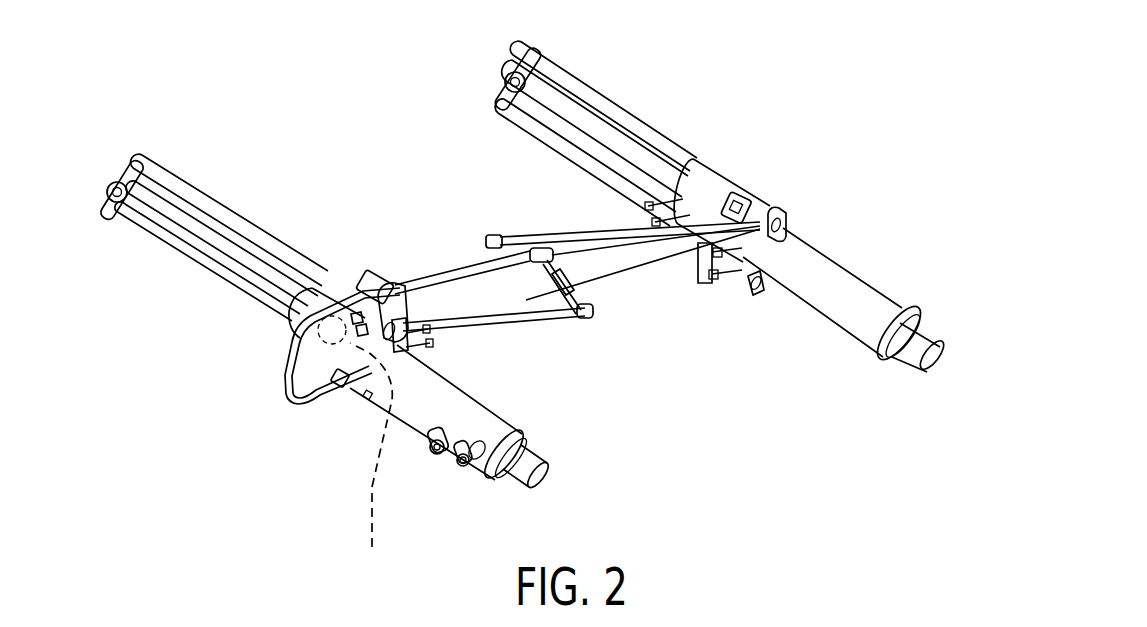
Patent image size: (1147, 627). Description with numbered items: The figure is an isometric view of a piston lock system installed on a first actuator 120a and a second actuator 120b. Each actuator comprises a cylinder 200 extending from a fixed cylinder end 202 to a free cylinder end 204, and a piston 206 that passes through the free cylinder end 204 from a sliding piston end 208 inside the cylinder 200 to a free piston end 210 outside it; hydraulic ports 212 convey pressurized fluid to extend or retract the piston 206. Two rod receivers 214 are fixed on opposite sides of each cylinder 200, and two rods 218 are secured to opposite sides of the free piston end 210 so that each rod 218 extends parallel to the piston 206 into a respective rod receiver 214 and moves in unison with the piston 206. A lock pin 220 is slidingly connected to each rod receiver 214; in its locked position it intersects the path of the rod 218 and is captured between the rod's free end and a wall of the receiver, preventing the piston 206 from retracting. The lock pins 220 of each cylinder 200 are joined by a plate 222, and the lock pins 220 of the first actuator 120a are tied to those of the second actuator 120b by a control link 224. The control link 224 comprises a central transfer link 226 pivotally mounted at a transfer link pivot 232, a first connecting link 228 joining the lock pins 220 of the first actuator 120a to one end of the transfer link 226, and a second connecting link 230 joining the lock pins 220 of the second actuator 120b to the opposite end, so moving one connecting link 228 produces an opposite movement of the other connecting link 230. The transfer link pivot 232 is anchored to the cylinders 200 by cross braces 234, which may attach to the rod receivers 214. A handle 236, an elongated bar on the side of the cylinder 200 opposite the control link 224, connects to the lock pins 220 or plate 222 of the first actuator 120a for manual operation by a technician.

The first actuator 120a is at (268, 423).
The second actuator 120b is at (813, 340).
The cylinder 200 is at (425, 412).
The fixed cylinder end 202 is at (517, 463).
The free cylinder end 204 is at (293, 298).
The piston 206 is at (158, 210).
The sliding piston end 208 is at (371, 461).
The free piston end 210 is at (113, 186).
The hydraulic ports 212 is at (463, 466).
The rod receiver 214 is at (331, 285).
The rod 218 is at (220, 218).
The lock pin 220 is at (380, 302).
The plate 222 is at (393, 313).
The control link 224 is at (625, 437).
The transfer link 226 is at (580, 300).
The first connecting link 228 is at (530, 325).
The second connecting link 230 is at (523, 243).
The transfer link pivot 232 is at (568, 280).
The cross braces 234 is at (440, 281).
The handle 236 is at (293, 383).